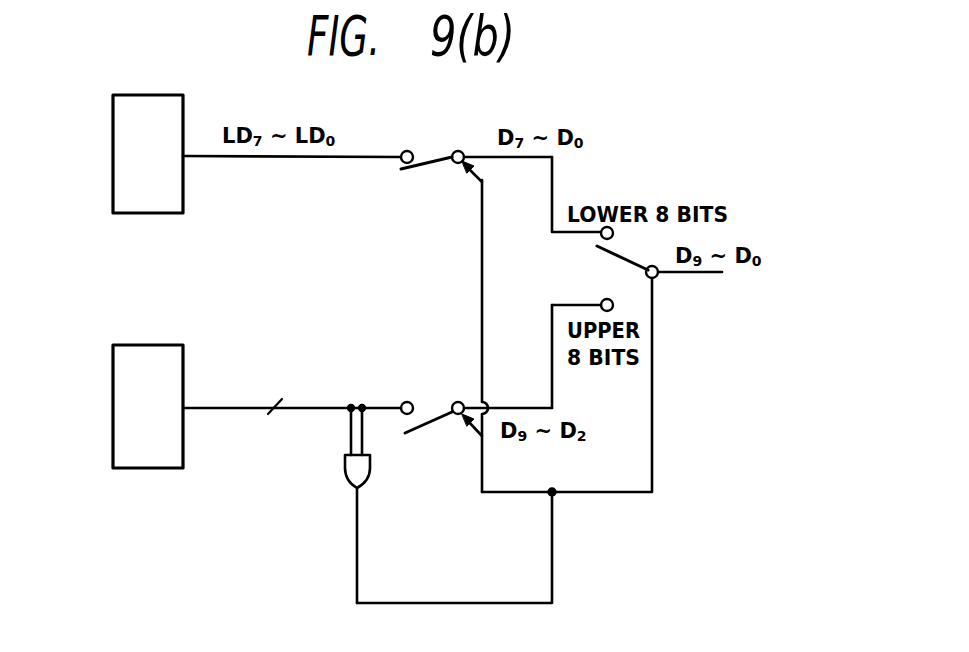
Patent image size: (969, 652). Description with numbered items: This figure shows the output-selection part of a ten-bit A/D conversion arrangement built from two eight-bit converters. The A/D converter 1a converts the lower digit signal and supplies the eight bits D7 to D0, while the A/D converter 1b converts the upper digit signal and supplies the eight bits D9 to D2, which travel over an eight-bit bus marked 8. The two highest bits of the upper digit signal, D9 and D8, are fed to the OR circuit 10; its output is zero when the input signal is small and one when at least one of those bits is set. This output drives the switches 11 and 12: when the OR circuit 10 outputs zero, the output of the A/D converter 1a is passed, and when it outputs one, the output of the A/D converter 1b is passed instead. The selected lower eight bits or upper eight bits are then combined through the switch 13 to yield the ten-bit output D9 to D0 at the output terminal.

The A/D converter 1a is at (170, 214).
The A/D converter 1b is at (170, 470).
The 8-bit bus 8 is at (287, 408).
The OR circuit 10 is at (340, 468).
The switch 11 is at (433, 173).
The switch 12 is at (433, 423).
The switch 13 is at (596, 257).